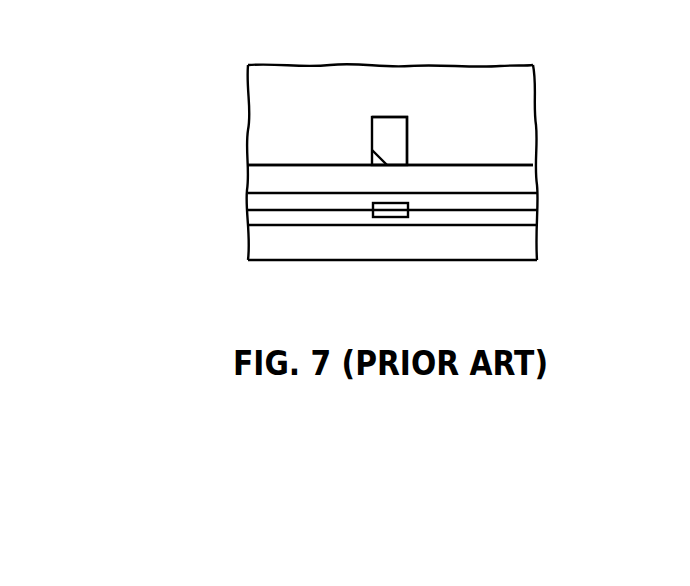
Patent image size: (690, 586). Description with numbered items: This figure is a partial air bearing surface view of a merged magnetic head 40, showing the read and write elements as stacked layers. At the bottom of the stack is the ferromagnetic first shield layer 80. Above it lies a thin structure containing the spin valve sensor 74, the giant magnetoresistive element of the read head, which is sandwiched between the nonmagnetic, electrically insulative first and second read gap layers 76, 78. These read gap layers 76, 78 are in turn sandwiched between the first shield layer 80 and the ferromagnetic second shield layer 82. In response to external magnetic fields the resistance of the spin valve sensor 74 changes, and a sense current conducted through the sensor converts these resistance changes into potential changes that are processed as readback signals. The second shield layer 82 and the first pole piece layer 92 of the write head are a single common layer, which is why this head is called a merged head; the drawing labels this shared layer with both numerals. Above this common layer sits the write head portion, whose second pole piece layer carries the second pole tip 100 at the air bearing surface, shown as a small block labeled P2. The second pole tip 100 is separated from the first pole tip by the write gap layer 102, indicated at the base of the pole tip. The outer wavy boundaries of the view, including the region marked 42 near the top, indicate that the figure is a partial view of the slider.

The merged magnetic head 40 is at (562, 76).
The upper layer 42 is at (263, 92).
The second pole tip 100 is at (390, 118).
The write gap layer 102 is at (385, 162).
The second polysilicon layer P2 is at (410, 130).
The second shield layer 82 is at (263, 185).
The first pole piece layer 92 is at (390, 180).
The second read gap layer 78 is at (505, 200).
The spin valve sensor 74 is at (395, 213).
The first read gap layer 76 is at (289, 225).
The first shield layer 80 is at (527, 241).